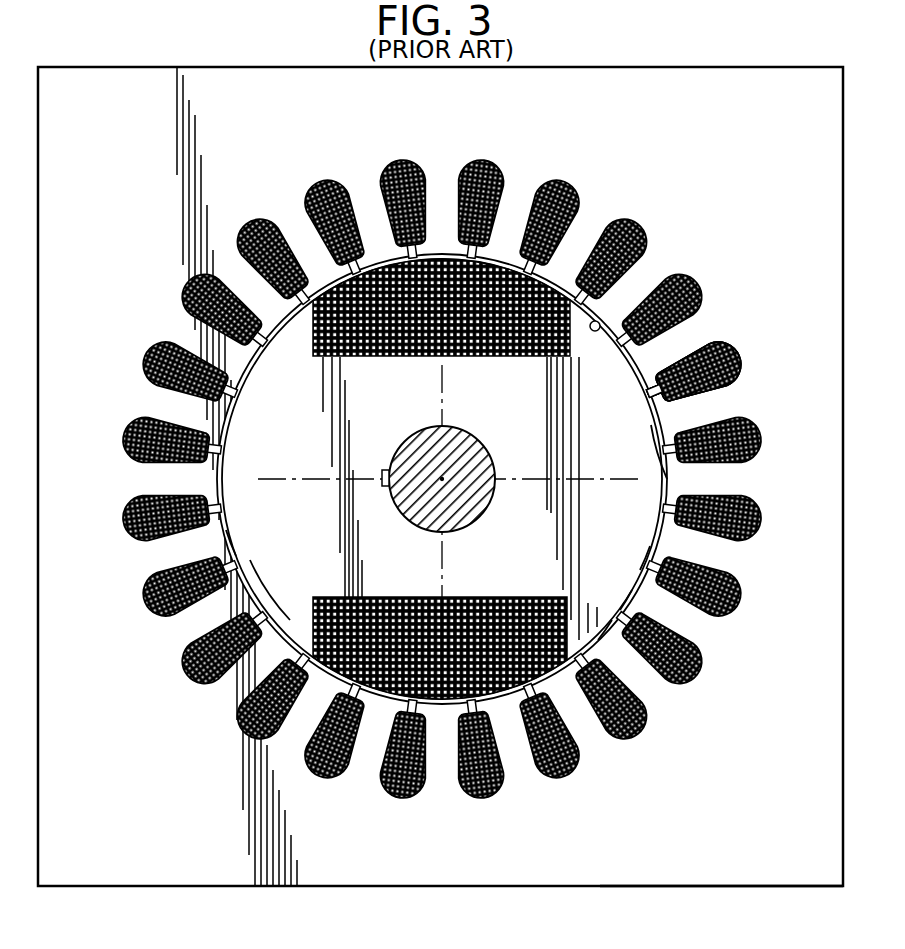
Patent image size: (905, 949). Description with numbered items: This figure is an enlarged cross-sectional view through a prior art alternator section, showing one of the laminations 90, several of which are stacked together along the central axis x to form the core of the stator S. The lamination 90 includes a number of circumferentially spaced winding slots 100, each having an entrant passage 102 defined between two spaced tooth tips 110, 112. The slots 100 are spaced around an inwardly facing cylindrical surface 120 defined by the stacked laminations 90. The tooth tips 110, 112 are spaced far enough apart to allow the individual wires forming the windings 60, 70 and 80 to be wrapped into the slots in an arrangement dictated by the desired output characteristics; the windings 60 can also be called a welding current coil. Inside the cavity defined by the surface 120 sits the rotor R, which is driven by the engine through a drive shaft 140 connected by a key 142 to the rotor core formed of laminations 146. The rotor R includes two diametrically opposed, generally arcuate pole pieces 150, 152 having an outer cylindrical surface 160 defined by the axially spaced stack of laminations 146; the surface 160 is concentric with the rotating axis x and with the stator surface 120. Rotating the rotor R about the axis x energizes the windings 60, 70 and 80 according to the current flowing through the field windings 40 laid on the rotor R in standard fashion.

The field windings 40 is at (480, 597).
The welding current windings 60 is at (503, 180).
The windings 70 is at (729, 346).
The windings 80 is at (702, 394).
The lamination 90 is at (487, 868).
The winding slots 100 is at (704, 346).
The entrant passage 102 is at (644, 401).
The tooth tip 110 is at (648, 390).
The tooth tip 112 is at (652, 425).
The cylindrical surface 120 is at (600, 321).
The drive shaft 140 is at (420, 527).
The key 142 is at (382, 478).
The laminations 146 is at (270, 573).
The pole piece 150 is at (224, 530).
The pole piece 152 is at (655, 545).
The outer cylindrical surface 160 is at (604, 632).
The rotor R is at (631, 597).
The stator S is at (688, 889).
The central axis x is at (446, 476).